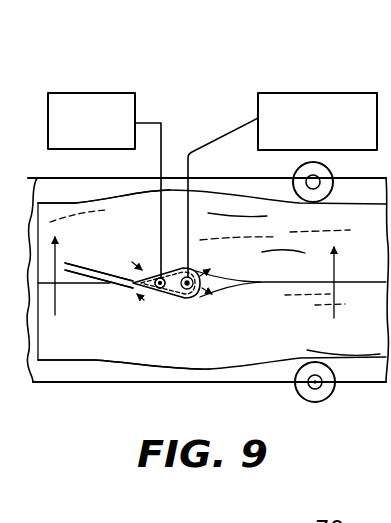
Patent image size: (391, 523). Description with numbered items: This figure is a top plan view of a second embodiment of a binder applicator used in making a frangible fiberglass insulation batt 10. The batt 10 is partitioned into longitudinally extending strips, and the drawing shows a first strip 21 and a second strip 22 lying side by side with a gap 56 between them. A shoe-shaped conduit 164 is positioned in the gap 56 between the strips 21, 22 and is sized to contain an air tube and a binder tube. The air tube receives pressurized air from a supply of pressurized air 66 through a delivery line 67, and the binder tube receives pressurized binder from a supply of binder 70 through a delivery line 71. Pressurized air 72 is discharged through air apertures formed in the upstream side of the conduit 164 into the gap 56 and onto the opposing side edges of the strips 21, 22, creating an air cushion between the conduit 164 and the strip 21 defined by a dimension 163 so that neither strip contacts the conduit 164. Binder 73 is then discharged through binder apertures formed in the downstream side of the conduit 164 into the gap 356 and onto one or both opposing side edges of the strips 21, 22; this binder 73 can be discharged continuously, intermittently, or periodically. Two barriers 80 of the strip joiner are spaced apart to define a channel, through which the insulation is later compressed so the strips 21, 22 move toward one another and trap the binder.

The frangible fiberglass insulation batt 10 is at (212, 279).
The first strip 21 is at (97, 357).
The second strip 22 is at (78, 202).
The gap 56 is at (74, 280).
The supply of pressurized air 66 is at (48, 130).
The delivery line 67 is at (168, 114).
The supply of binder 70 is at (258, 110).
The delivery line 71 is at (209, 148).
The pressurized air 72 is at (138, 308).
The binder 73 is at (202, 302).
The barriers 80 is at (337, 170).
The dimension 163 is at (84, 259).
The shoe-shaped conduit 164 is at (172, 299).
The gap 356 is at (220, 280).